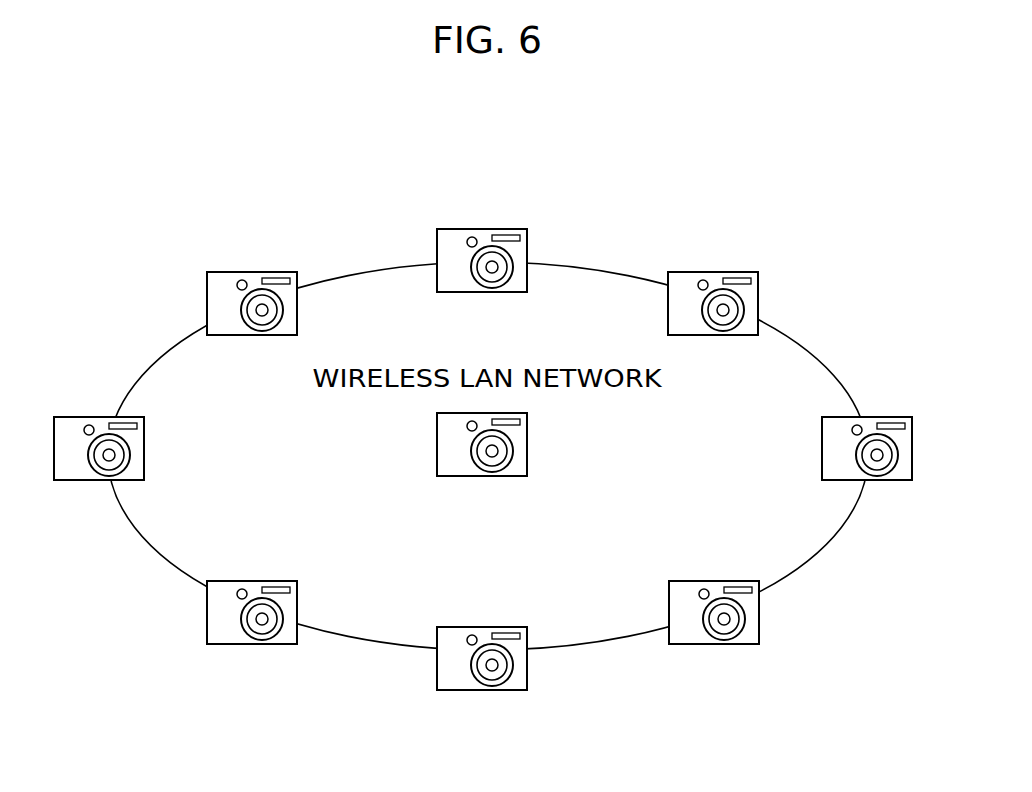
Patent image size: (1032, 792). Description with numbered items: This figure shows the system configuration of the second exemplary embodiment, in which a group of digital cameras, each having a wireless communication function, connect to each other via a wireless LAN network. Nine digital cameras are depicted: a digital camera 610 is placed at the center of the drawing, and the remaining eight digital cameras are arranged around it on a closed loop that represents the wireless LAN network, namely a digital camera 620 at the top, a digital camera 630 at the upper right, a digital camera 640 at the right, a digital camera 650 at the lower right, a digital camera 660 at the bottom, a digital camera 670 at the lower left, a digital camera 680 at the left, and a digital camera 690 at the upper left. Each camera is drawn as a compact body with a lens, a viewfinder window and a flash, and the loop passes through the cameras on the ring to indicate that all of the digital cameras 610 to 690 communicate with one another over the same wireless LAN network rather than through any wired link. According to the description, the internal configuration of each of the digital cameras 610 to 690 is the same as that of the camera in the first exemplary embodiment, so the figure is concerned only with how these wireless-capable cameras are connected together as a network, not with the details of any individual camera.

The digital camera 610 is at (488, 477).
The digital camera 620 is at (483, 229).
The digital camera 630 is at (715, 272).
The digital camera 640 is at (888, 417).
The digital camera 650 is at (719, 645).
The digital camera 660 is at (488, 691).
The digital camera 670 is at (258, 645).
The digital camera 680 is at (75, 417).
The digital camera 690 is at (254, 272).